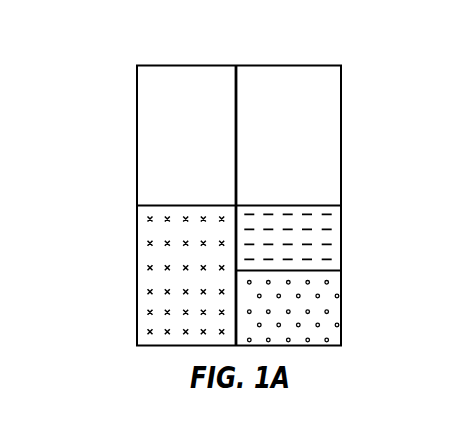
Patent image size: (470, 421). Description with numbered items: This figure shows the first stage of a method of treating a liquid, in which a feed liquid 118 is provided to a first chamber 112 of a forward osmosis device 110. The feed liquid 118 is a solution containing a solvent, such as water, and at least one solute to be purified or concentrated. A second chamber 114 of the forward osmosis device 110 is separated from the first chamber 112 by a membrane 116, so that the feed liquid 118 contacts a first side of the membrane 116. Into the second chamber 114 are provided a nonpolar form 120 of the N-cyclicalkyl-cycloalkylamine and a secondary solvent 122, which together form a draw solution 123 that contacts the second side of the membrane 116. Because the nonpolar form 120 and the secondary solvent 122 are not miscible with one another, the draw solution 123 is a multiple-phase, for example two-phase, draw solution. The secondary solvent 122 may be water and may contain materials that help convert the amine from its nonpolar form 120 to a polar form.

The forward osmosis device 110 is at (106, 204).
The first chamber 112 is at (186, 88).
The second chamber 114 is at (315, 116).
The membrane 116 is at (238, 105).
The feed liquid 118 is at (152, 293).
The nonpolar form of the N-cyclicalkyl-cycloalkylamine 120 is at (318, 240).
The secondary solvent 122 is at (320, 317).
The draw solution 123 is at (416, 223).